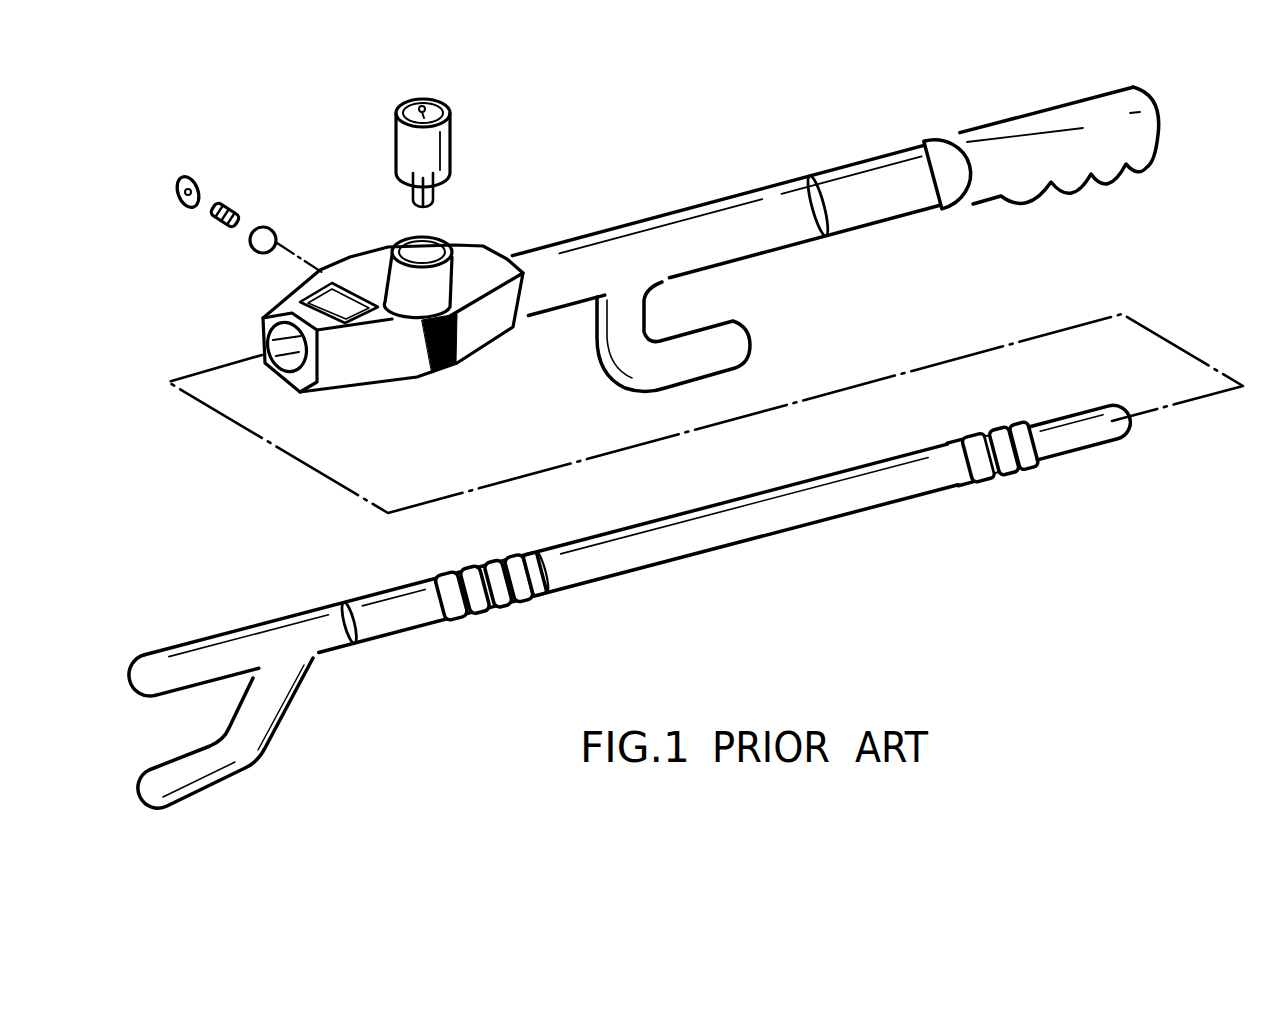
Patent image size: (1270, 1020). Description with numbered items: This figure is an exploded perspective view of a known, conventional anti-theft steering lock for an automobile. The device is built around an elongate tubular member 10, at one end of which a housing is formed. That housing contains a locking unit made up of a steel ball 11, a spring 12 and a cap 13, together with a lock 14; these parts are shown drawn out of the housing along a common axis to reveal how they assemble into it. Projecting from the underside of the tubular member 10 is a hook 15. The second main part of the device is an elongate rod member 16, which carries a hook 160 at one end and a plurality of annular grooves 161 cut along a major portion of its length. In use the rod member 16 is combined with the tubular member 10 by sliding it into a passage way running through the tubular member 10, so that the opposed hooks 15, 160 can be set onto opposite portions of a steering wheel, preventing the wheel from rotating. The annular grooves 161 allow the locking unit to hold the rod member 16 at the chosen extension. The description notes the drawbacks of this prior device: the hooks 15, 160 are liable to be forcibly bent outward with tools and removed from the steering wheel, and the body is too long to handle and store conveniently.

The elongate tubular member 10 is at (796, 177).
The steel ball 11 is at (278, 227).
The spring 12 is at (240, 204).
The cap 13 is at (204, 178).
The lock 14 is at (458, 142).
The hook 15 is at (748, 332).
The elongate rod member 16 is at (651, 570).
The hook 160 is at (270, 712).
The annular grooves 161 is at (500, 597).